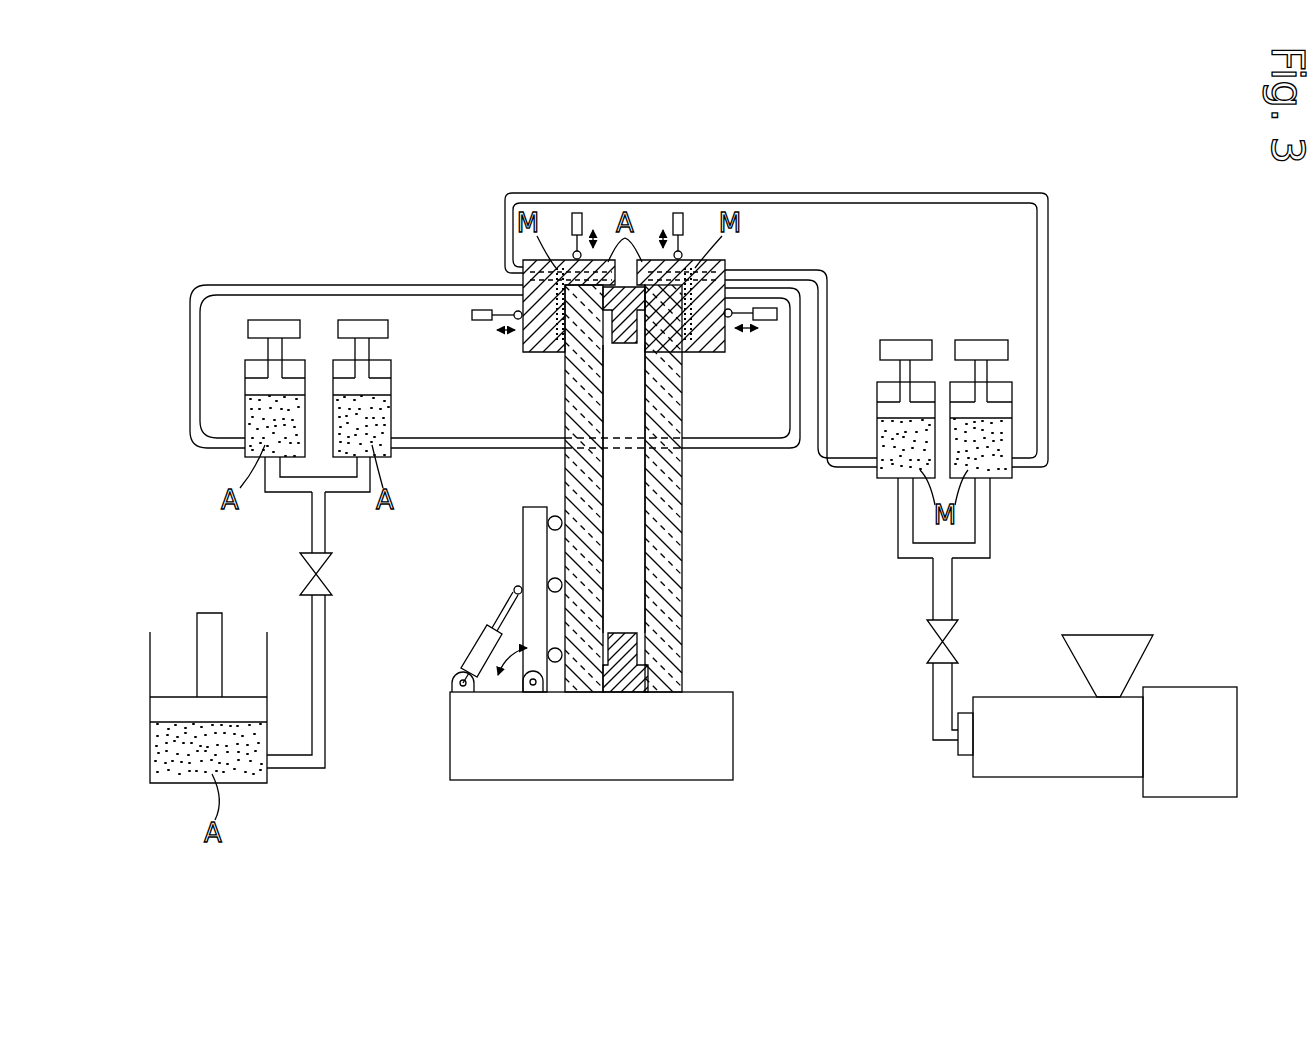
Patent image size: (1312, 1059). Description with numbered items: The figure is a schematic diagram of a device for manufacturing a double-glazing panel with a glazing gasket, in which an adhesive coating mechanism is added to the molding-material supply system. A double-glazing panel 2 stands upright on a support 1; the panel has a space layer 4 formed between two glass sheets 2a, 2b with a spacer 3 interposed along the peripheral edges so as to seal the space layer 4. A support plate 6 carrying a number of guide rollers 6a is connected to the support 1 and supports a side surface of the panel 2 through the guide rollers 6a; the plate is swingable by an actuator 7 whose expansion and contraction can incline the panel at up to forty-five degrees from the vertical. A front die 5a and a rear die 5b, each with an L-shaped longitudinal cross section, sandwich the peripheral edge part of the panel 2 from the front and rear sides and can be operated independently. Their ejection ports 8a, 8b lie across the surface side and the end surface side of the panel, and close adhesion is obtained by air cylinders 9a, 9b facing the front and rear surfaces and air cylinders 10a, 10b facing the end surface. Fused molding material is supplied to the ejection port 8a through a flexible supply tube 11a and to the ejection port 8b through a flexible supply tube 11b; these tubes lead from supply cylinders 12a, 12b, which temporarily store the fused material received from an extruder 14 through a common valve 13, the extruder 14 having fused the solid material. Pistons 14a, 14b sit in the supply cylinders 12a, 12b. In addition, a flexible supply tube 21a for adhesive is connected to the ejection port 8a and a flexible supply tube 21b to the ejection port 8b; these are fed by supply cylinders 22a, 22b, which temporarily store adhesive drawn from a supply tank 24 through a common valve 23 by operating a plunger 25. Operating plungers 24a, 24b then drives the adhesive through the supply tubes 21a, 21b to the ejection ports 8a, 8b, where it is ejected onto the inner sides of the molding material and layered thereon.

The support 1 is at (488, 784).
The double-glazing panel 2 is at (629, 488).
The glass sheet 2a is at (565, 465).
The glass sheet 2b is at (682, 467).
The spacer 3 is at (625, 346).
The space layer 4 is at (640, 535).
The front die 5a is at (723, 353).
The rear die 5b is at (524, 353).
The support plate 6 is at (521, 565).
The guide rollers 6a is at (549, 580).
The actuator 7 is at (485, 625).
The ejection port 8a is at (688, 342).
The ejection port 8b is at (560, 342).
The air cylinder 9a is at (765, 321).
The air cylinder 9b is at (483, 322).
The air cylinder 10a is at (679, 210).
The air cylinder 10b is at (575, 210).
The flexible supply tube 11a is at (827, 467).
The flexible supply tube 11b is at (874, 193).
The supply cylinder 12a is at (879, 370).
The supply cylinder 12b is at (1040, 370).
The valve 13 is at (947, 634).
The extruder 14 is at (1025, 696).
The piston 14a is at (905, 340).
The piston 14b is at (982, 340).
The flexible supply tube 21a is at (782, 449).
The flexible supply tube 21b is at (436, 285).
The supply cylinder 22a is at (403, 377).
The supply cylinder 22b is at (216, 377).
The valve 23 is at (300, 565).
The supply tank 24 is at (176, 787).
The plunger 24a is at (365, 325).
The plunger 24b is at (268, 325).
The plunger 25 is at (170, 705).